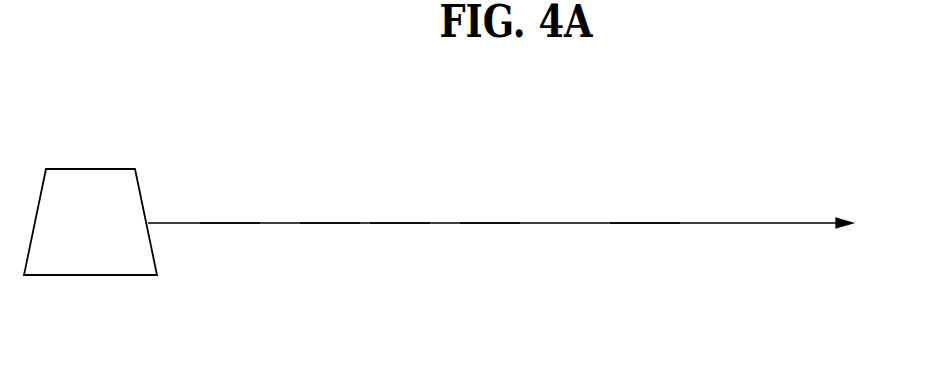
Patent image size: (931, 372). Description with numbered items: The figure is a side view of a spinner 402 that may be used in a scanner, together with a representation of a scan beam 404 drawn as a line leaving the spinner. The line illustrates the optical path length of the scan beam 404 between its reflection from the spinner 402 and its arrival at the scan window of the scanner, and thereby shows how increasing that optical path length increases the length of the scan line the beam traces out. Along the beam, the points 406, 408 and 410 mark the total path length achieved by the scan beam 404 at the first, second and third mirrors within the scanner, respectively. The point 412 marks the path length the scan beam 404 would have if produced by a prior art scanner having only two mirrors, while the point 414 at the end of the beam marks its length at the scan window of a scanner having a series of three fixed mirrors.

The spinner 402 is at (95, 275).
The scan beam 404 is at (247, 223).
The point 406 is at (340, 223).
The point 412 is at (407, 223).
The point 408 is at (500, 223).
The point 410 is at (655, 223).
The point 414 is at (857, 222).